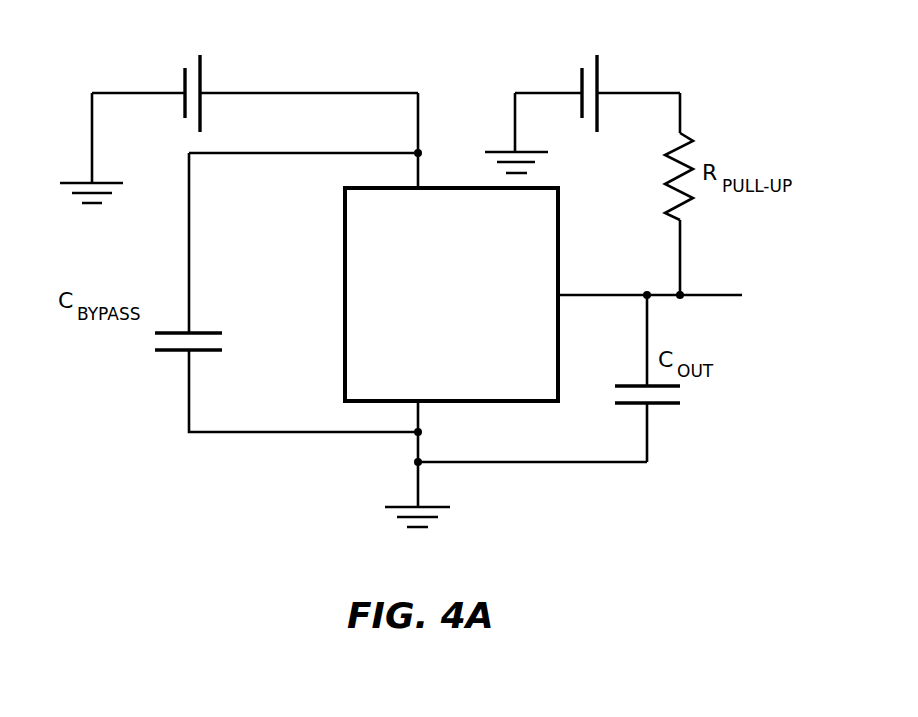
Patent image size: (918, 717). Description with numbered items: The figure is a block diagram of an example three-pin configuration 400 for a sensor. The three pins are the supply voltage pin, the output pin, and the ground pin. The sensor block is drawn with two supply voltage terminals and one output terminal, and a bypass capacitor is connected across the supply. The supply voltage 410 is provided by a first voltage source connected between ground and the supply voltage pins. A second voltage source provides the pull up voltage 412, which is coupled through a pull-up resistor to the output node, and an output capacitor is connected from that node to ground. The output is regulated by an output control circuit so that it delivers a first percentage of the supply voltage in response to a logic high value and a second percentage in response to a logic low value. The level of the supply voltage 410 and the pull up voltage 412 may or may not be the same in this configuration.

The three-pin configuration 400 is at (451, 294).
The VCC 410 is at (197, 68).
The pull up voltage VPULL 412 is at (595, 67).